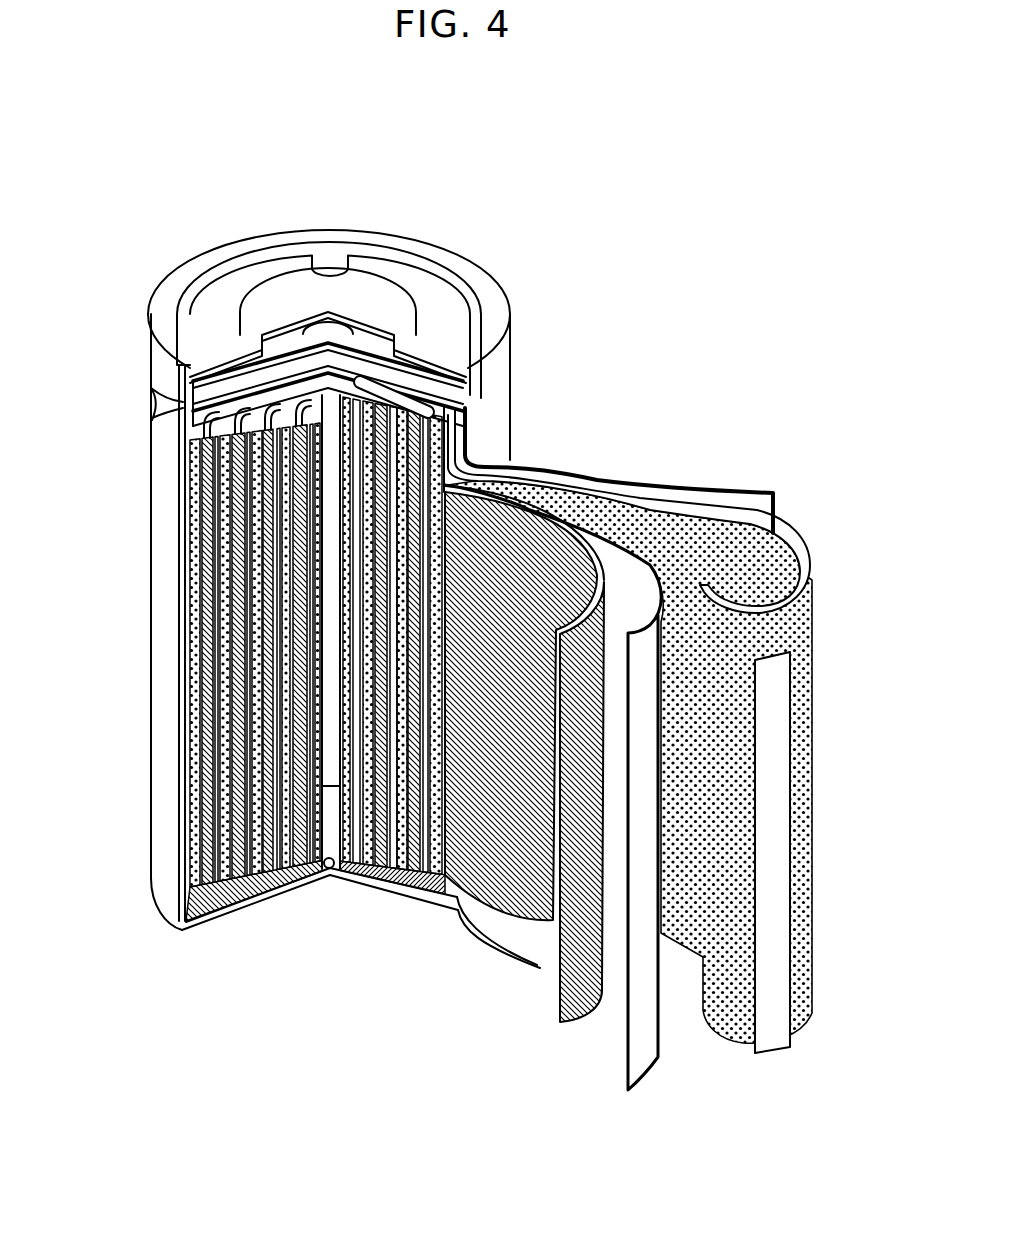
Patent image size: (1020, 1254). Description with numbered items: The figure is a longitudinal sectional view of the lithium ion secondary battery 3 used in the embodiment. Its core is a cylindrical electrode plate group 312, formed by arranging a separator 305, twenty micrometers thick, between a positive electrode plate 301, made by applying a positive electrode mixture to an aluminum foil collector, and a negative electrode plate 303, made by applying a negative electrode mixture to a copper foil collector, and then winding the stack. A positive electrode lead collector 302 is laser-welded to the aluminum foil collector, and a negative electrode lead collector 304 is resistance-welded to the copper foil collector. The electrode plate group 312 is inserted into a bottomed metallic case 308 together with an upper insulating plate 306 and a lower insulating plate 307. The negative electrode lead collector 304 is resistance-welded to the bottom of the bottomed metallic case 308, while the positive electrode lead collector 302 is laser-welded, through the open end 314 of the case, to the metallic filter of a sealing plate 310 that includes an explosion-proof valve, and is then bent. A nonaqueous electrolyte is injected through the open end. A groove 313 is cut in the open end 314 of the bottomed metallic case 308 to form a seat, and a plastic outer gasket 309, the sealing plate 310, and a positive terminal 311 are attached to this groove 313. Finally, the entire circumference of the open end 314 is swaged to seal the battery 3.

The battery 3 is at (477, 212).
The positive electrode plate 301 is at (580, 798).
The positive electrode lead collector 302 is at (487, 380).
The negative electrode plate 303 is at (777, 638).
The negative electrode lead collector 304 is at (767, 861).
The separator 305 is at (627, 574).
The upper insulating plate 306 is at (232, 422).
The lower insulating plate 307 is at (256, 890).
The bottomed metallic case 308 is at (165, 721).
The plastic outer gasket 309 is at (478, 382).
The sealing plate 310 is at (268, 347).
The positive terminal 311 is at (354, 282).
The electrode plate group 312 is at (878, 376).
The groove 313 is at (158, 395).
The open end 314 is at (329, 252).